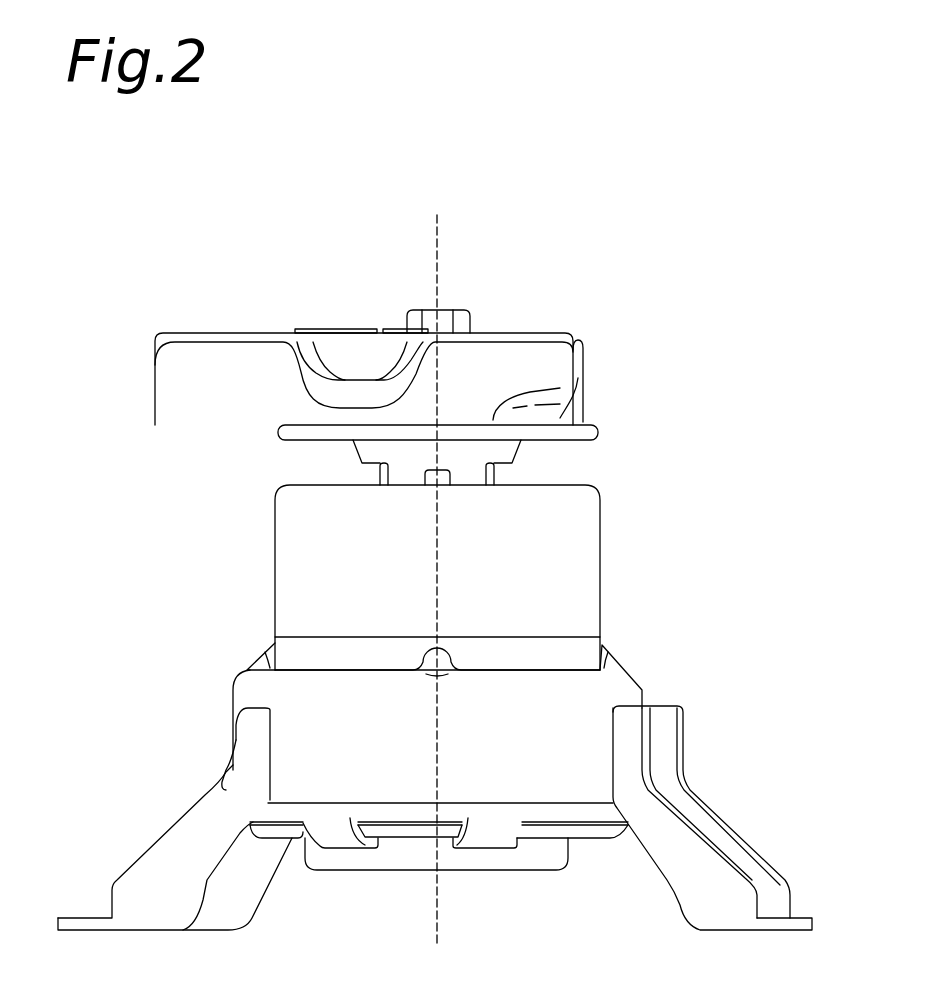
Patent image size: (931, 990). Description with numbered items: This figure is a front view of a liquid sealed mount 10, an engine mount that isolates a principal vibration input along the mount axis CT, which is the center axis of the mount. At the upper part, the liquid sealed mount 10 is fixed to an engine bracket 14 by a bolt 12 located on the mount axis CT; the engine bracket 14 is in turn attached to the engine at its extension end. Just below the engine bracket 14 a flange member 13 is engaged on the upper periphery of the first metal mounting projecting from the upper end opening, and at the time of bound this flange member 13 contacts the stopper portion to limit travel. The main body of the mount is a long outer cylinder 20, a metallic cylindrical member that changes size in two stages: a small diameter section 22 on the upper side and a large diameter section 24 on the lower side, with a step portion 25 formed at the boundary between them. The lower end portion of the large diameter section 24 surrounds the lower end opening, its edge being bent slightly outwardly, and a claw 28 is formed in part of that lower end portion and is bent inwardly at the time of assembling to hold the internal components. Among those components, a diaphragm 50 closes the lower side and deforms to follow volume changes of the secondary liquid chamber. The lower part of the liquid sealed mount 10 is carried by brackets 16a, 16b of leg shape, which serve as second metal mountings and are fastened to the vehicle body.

The liquid sealed mount 10 is at (435, 565).
The bolt 12 is at (470, 312).
The flange member 13 is at (353, 448).
The engine bracket 14 is at (197, 333).
The bracket of leg shape 16a is at (165, 855).
The bracket of leg shape 16b is at (717, 835).
The outer cylinder 20 is at (449, 578).
The small diameter section 22 is at (292, 547).
The large diameter section 24 is at (302, 688).
The step portion 25 is at (568, 653).
The claw 28 is at (337, 837).
The diaphragm 50 is at (543, 862).